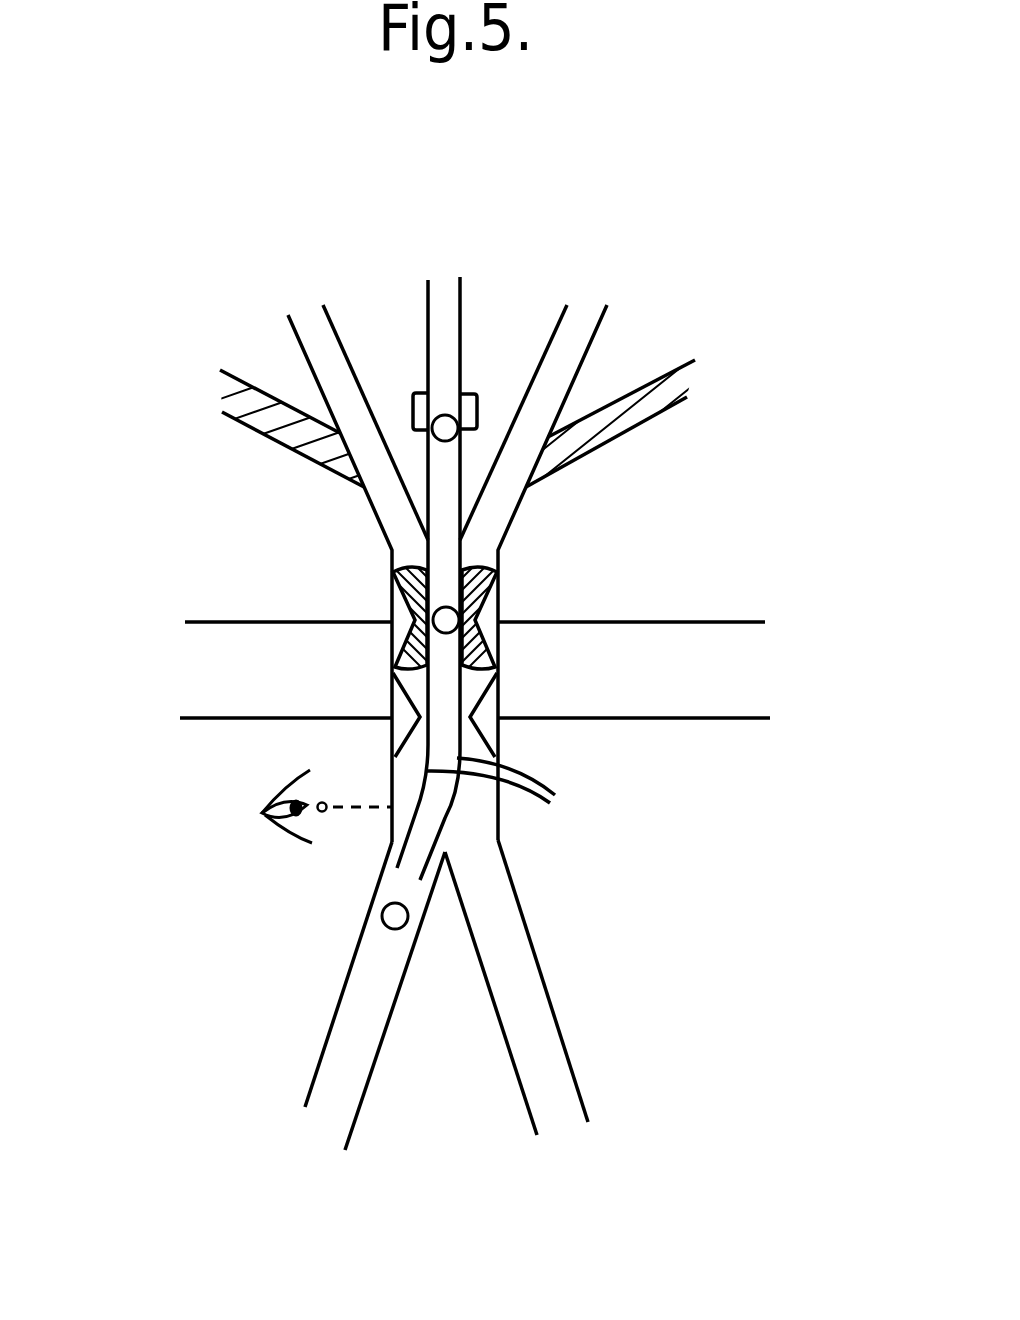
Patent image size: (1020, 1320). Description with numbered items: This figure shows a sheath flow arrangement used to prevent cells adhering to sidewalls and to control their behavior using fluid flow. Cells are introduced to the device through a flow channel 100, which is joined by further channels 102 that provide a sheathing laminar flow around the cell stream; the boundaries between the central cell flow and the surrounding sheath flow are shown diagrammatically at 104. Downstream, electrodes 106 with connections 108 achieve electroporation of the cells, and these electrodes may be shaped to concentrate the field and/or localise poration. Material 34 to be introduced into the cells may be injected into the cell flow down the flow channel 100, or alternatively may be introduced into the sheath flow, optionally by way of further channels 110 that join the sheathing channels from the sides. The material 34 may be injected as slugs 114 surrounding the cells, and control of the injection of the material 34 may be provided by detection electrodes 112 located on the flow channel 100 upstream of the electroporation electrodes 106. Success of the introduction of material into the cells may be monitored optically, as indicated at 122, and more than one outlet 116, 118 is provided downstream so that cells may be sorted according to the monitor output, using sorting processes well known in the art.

The flow channel 100 is at (443, 312).
The further channels 102 is at (318, 343).
The material to be introduced into cells 34 is at (252, 407).
The further channels 110 is at (241, 426).
The detection electrodes 112 is at (477, 400).
The slugs 114 is at (497, 566).
The electrodes 106 is at (398, 606).
The connections 108 is at (250, 622).
The boundaries between the flows 104 is at (552, 800).
The optical monitor 122 is at (282, 818).
The outlet 116 is at (333, 1022).
The outlet 118 is at (553, 1032).